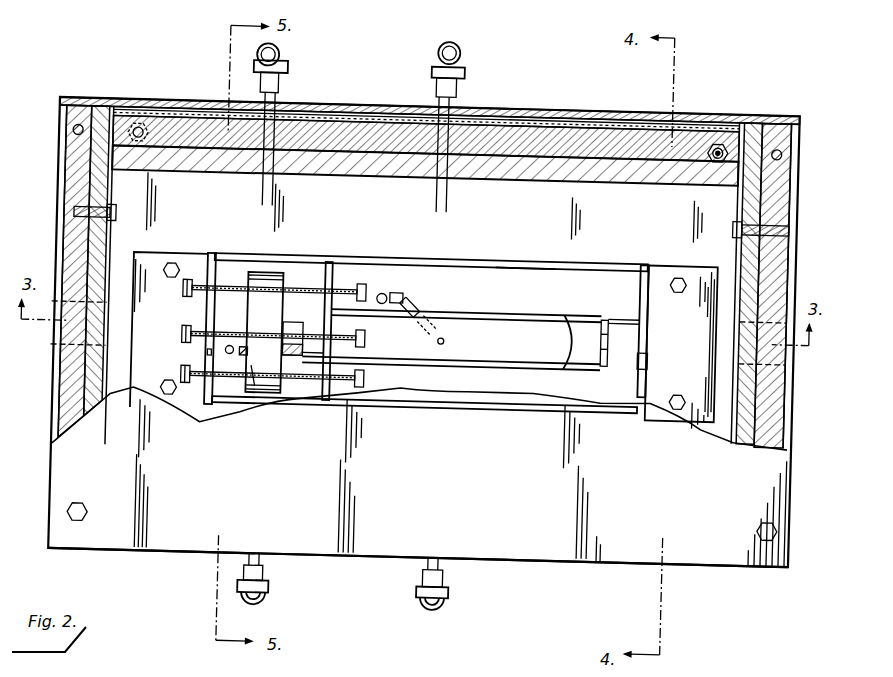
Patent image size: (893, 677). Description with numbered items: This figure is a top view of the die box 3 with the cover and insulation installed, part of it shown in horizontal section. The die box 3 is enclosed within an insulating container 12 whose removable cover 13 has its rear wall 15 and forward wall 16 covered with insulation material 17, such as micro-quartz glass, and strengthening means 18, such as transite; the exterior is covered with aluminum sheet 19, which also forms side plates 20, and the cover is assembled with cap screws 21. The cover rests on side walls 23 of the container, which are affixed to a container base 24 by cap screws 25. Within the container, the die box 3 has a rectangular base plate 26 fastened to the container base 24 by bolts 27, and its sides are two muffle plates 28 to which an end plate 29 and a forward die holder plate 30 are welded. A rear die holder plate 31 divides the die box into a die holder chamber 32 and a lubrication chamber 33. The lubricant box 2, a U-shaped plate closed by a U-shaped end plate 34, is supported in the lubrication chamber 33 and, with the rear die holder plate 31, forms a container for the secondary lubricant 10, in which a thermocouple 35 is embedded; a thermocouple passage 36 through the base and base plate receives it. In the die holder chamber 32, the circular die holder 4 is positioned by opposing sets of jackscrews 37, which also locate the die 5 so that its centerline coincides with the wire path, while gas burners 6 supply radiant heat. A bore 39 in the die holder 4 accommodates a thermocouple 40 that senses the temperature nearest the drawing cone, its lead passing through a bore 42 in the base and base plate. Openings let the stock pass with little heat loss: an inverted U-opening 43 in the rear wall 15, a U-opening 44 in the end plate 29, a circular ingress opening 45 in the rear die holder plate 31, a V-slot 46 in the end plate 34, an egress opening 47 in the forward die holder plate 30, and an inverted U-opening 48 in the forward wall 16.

The lubricant box 2 is at (575, 307).
The die box 3 is at (519, 259).
The die holder 4 is at (264, 332).
The die 5 is at (290, 321).
The gas burners 6 is at (282, 81).
The secondary lubricant 10 is at (451, 350).
The insulating container 12 is at (539, 562).
The removable cover 13 is at (418, 516).
The rear wall 15 is at (787, 215).
The forward wall 16 is at (67, 186).
The insulation material 17 is at (70, 163).
The strengthening means 18 is at (104, 183).
The aluminum sheet 19 is at (62, 214).
The side plates 20 is at (696, 117).
The cap screws 21 is at (82, 522).
The side walls 23 is at (372, 179).
The container base 24 is at (426, 161).
The cap screws 25 is at (145, 118).
The base plate 26 is at (681, 343).
The bolts 27 is at (177, 258).
The muffle plates 28 is at (443, 258).
The end plate 29 is at (648, 268).
The forward die holder plate 30 is at (200, 243).
The rear die holder plate 31 is at (338, 272).
The die holder chamber 32 is at (302, 268).
The lubrication chamber 33 is at (540, 286).
The U-shaped end plate 34 is at (616, 316).
The thermocouple 35 is at (414, 303).
The thermocouple passage 36 is at (392, 290).
The jackscrews 37 is at (185, 289).
The bore 39 is at (258, 374).
The thermocouple 40 is at (244, 353).
The bore 42 is at (233, 344).
The inverted U-opening 43 is at (774, 363).
The U-opening 44 is at (650, 350).
The circular ingress opening 45 is at (328, 352).
The V-slot 46 is at (610, 354).
The egress opening 47 is at (212, 352).
The inverted U-opening 48 is at (57, 342).